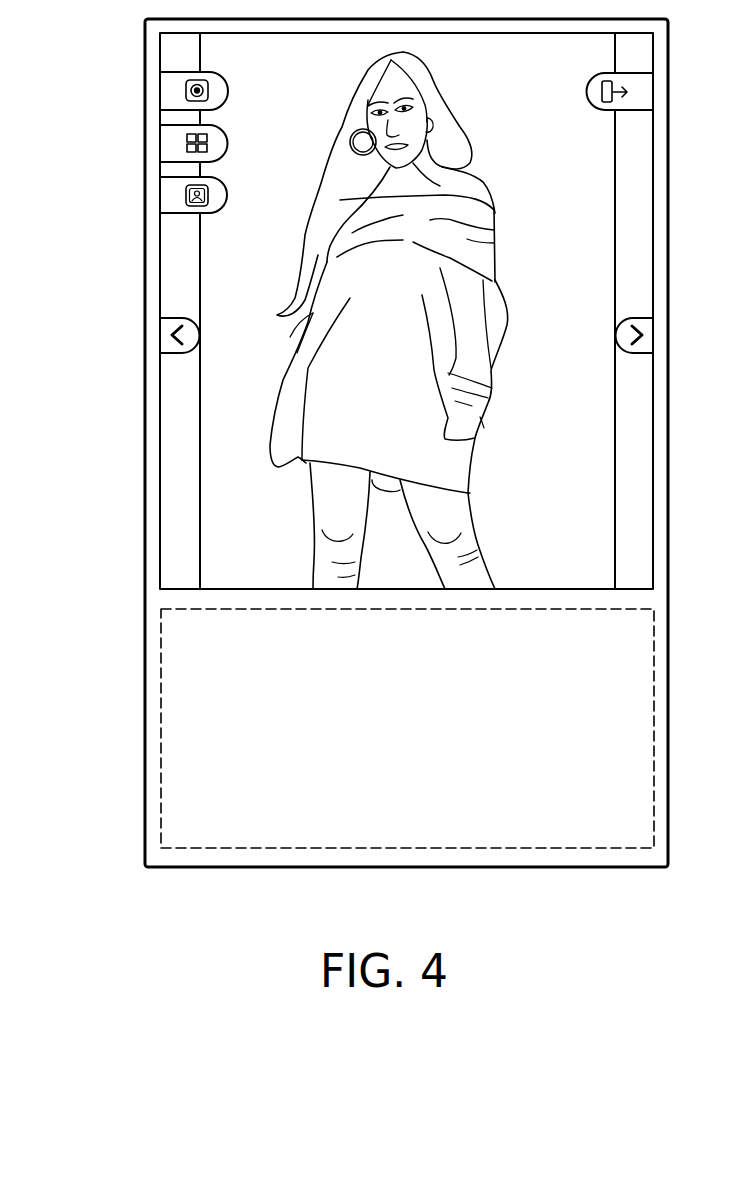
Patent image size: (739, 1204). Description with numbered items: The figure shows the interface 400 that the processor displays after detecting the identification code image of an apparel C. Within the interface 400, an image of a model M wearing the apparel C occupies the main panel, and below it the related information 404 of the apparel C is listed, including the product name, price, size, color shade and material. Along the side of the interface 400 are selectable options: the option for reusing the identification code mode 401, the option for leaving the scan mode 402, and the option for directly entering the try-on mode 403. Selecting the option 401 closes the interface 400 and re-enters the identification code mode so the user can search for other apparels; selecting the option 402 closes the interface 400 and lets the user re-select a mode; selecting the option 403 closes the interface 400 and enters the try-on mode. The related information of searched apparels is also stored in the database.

The interface 400 is at (145, 811).
The option for reusing the identification code mode 401 is at (165, 94).
The option for leaving the scan mode 402 is at (165, 146).
The option for directly entering the try-on mode 403 is at (165, 197).
The related information 404 is at (158, 705).
The model M is at (450, 95).
The apparel C is at (495, 238).